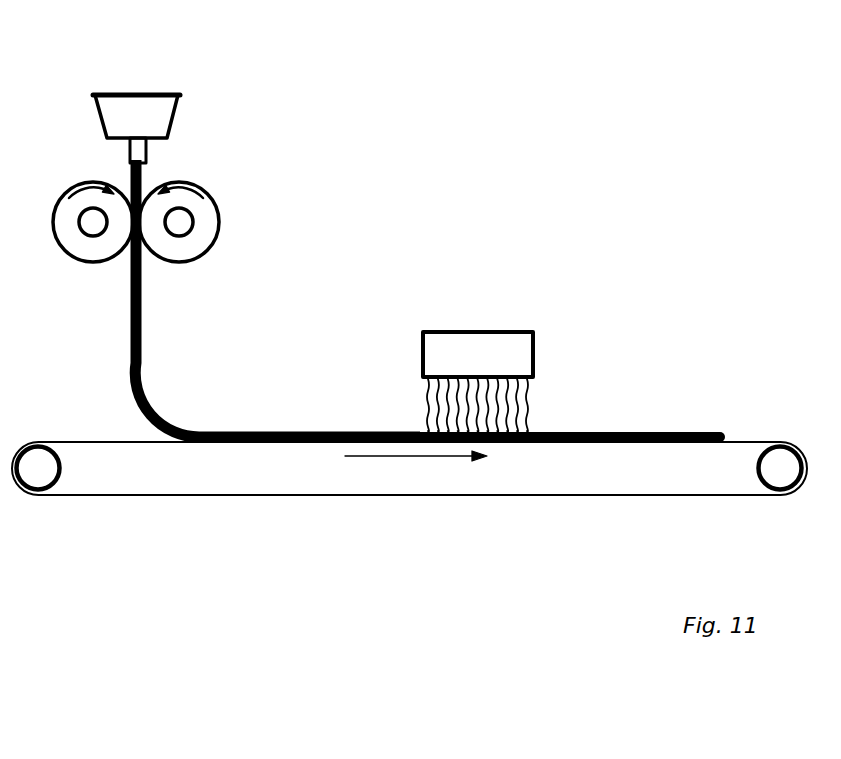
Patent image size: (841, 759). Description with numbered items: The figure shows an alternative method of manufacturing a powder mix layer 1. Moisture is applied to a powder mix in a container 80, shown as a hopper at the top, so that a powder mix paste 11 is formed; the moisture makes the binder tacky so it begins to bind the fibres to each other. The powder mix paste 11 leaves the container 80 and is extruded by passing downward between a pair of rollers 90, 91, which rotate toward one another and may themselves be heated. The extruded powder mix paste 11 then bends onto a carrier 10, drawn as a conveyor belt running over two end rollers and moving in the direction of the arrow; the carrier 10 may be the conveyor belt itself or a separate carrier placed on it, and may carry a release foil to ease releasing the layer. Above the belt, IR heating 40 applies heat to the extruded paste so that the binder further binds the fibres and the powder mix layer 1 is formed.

The powder mix layer 1 is at (688, 400).
The carrier 10 is at (143, 442).
The powder mix paste 11 is at (152, 397).
The IR heating 40 is at (492, 306).
The container 80 is at (214, 104).
The roller 90 is at (200, 212).
The roller 91 is at (77, 240).